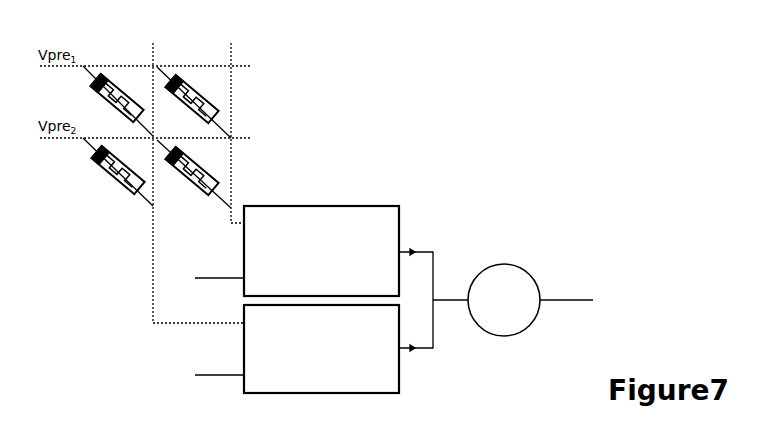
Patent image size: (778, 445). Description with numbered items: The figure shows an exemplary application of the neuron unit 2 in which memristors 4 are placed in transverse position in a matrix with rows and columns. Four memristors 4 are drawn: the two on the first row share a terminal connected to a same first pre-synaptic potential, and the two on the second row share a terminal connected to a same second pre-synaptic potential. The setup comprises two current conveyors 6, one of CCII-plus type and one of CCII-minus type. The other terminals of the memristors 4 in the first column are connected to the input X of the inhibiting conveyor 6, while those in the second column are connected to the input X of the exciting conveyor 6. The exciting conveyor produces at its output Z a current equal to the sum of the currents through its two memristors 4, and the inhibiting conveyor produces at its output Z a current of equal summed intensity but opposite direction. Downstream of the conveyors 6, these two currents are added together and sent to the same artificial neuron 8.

The neuron unit 2 is at (444, 153).
The memristor 4 is at (113, 80).
The current conveyor 6 is at (332, 209).
The artificial neuron 8 is at (528, 277).